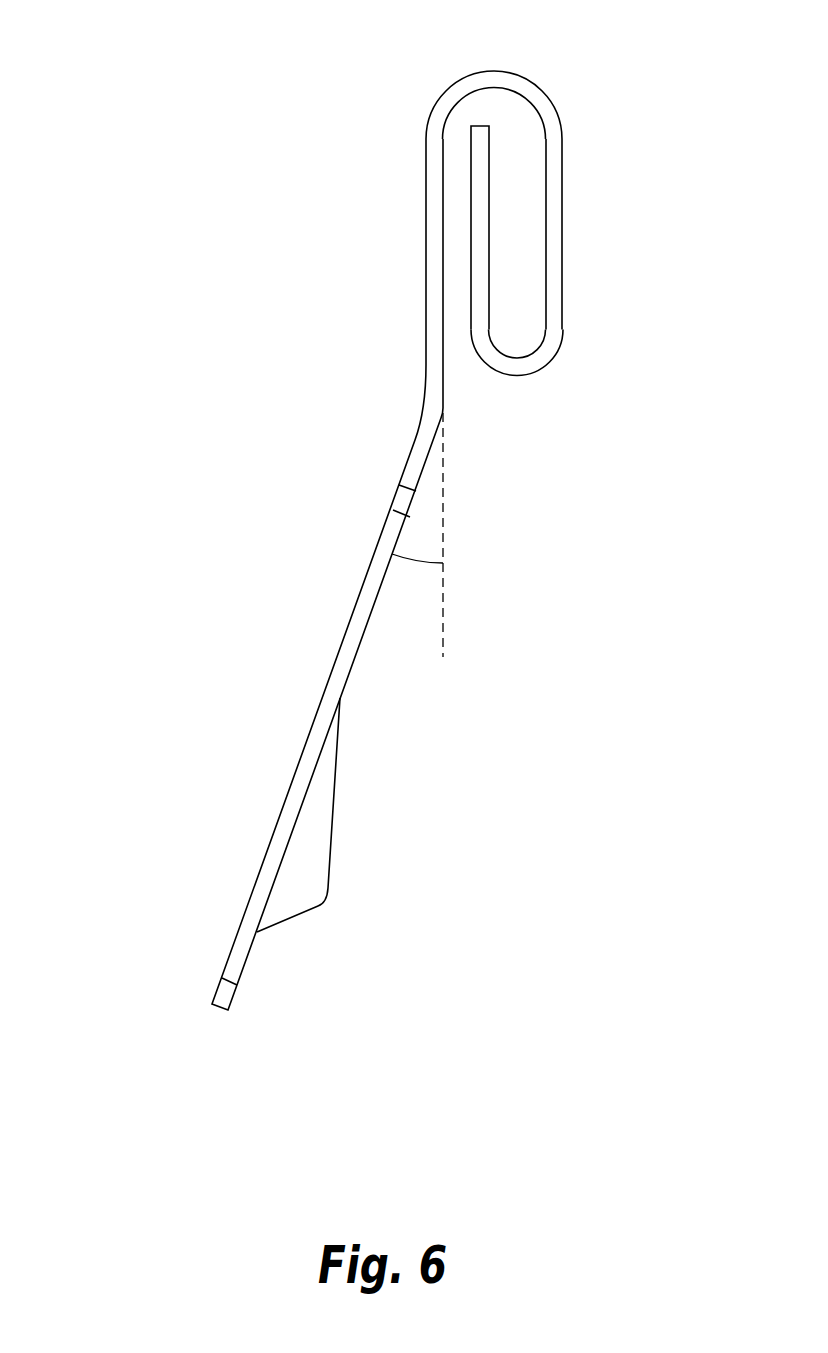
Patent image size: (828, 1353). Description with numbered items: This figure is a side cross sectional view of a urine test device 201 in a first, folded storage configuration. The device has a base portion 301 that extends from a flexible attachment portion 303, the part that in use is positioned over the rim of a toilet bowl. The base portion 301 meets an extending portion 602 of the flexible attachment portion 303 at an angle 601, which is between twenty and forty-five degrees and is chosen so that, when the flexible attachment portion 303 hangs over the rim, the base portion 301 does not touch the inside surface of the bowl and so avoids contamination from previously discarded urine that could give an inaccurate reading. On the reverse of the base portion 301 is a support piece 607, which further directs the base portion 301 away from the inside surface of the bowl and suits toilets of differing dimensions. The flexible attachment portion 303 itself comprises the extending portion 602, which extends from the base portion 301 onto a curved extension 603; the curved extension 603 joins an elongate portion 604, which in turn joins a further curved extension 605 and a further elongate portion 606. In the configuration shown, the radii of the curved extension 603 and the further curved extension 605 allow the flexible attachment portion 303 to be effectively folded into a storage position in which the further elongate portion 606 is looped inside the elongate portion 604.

The urine test device 201 is at (183, 247).
The base portion 301 is at (338, 663).
The flexible attachment portion 303 is at (555, 232).
The angle 601 is at (420, 567).
The extending portion 602 is at (429, 232).
The curved extension 603 is at (497, 75).
The elongate portion 604 is at (555, 318).
The further curved extension 605 is at (517, 375).
The further elongate portion 606 is at (482, 317).
The support piece 607 is at (334, 796).